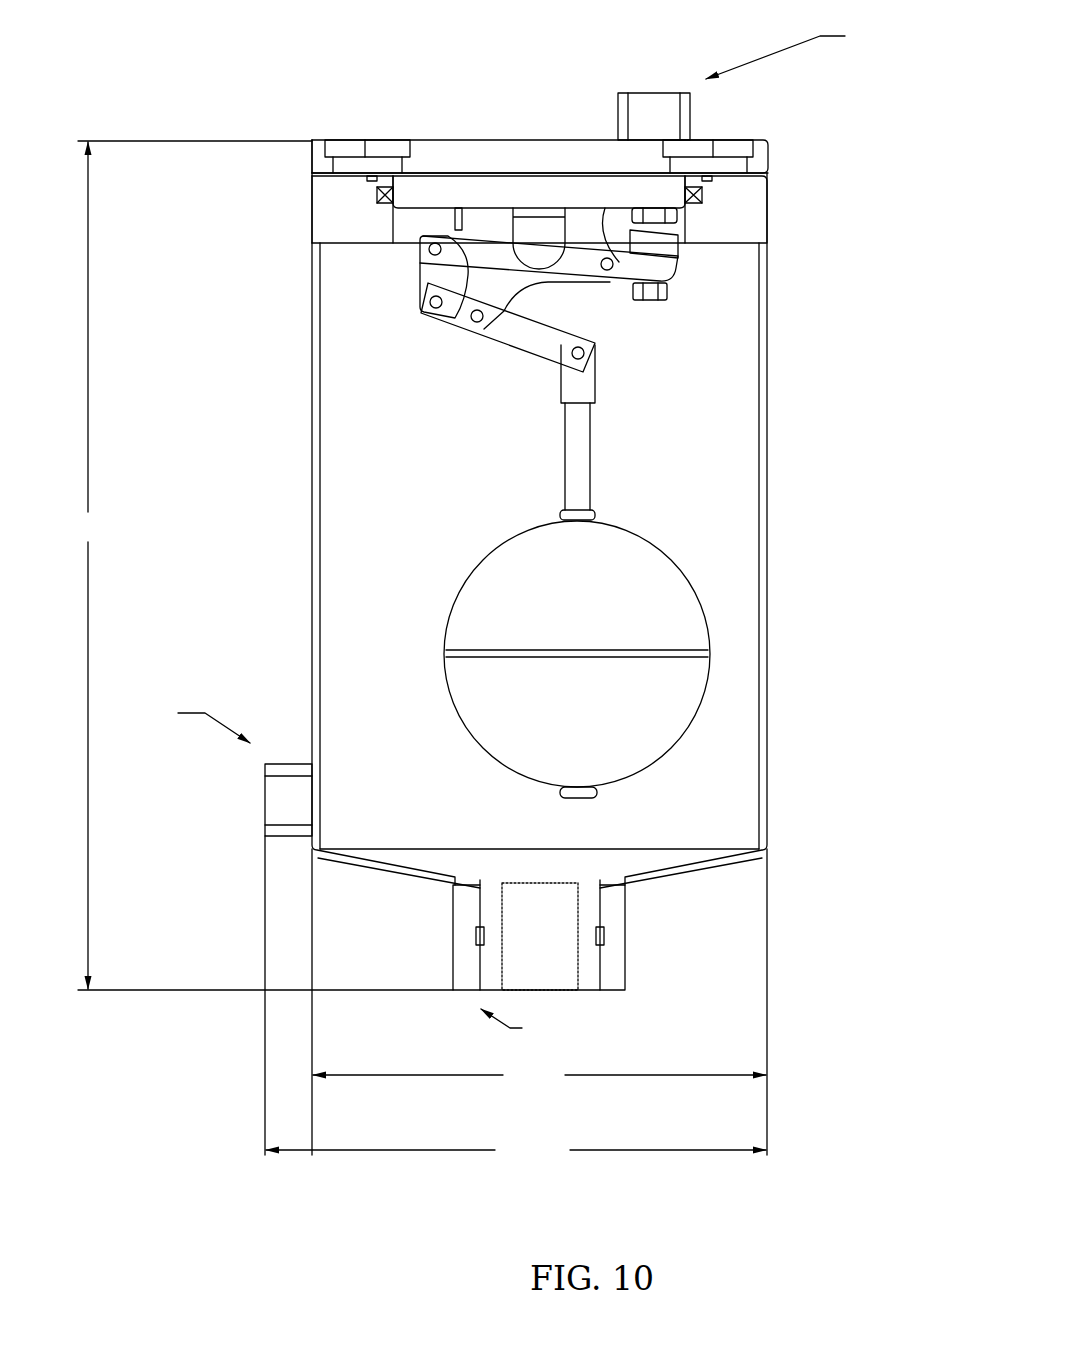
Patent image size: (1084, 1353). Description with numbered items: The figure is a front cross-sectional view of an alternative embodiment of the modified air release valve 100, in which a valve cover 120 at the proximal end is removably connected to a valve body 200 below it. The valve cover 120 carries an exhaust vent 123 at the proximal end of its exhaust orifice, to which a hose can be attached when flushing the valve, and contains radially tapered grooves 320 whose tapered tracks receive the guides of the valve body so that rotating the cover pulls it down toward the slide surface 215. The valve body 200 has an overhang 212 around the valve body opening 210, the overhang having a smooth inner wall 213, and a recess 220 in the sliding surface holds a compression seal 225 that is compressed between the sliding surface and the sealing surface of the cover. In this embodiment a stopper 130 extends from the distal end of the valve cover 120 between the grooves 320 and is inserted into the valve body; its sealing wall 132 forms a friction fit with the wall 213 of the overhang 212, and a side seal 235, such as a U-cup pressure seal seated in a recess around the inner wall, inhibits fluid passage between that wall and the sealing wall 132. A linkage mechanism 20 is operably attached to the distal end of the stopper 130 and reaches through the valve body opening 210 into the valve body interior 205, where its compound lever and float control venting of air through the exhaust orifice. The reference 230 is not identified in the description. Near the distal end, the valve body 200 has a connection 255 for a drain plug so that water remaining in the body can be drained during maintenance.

The modified air release valve 100 is at (403, 99).
The valve cover 120 is at (524, 137).
The exhaust vent 123 is at (639, 89).
The radially tapered grooves 320 is at (360, 147).
The slide surface 215 is at (311, 172).
The side seal 235 is at (377, 194).
The compression seal 225 is at (712, 181).
The recess 220 is at (713, 178).
The overhang 212 is at (330, 207).
The inner wall 213 is at (402, 216).
The retaining tabs 230 is at (377, 203).
The stopper 130 is at (447, 192).
The sealing wall 132 is at (698, 205).
The valve body opening 210 is at (397, 258).
The valve body interior 205 is at (383, 437).
The valve body 200 is at (772, 492).
The connection for a drain plug 255 is at (265, 808).
The linkage mechanism 20 is at (600, 383).